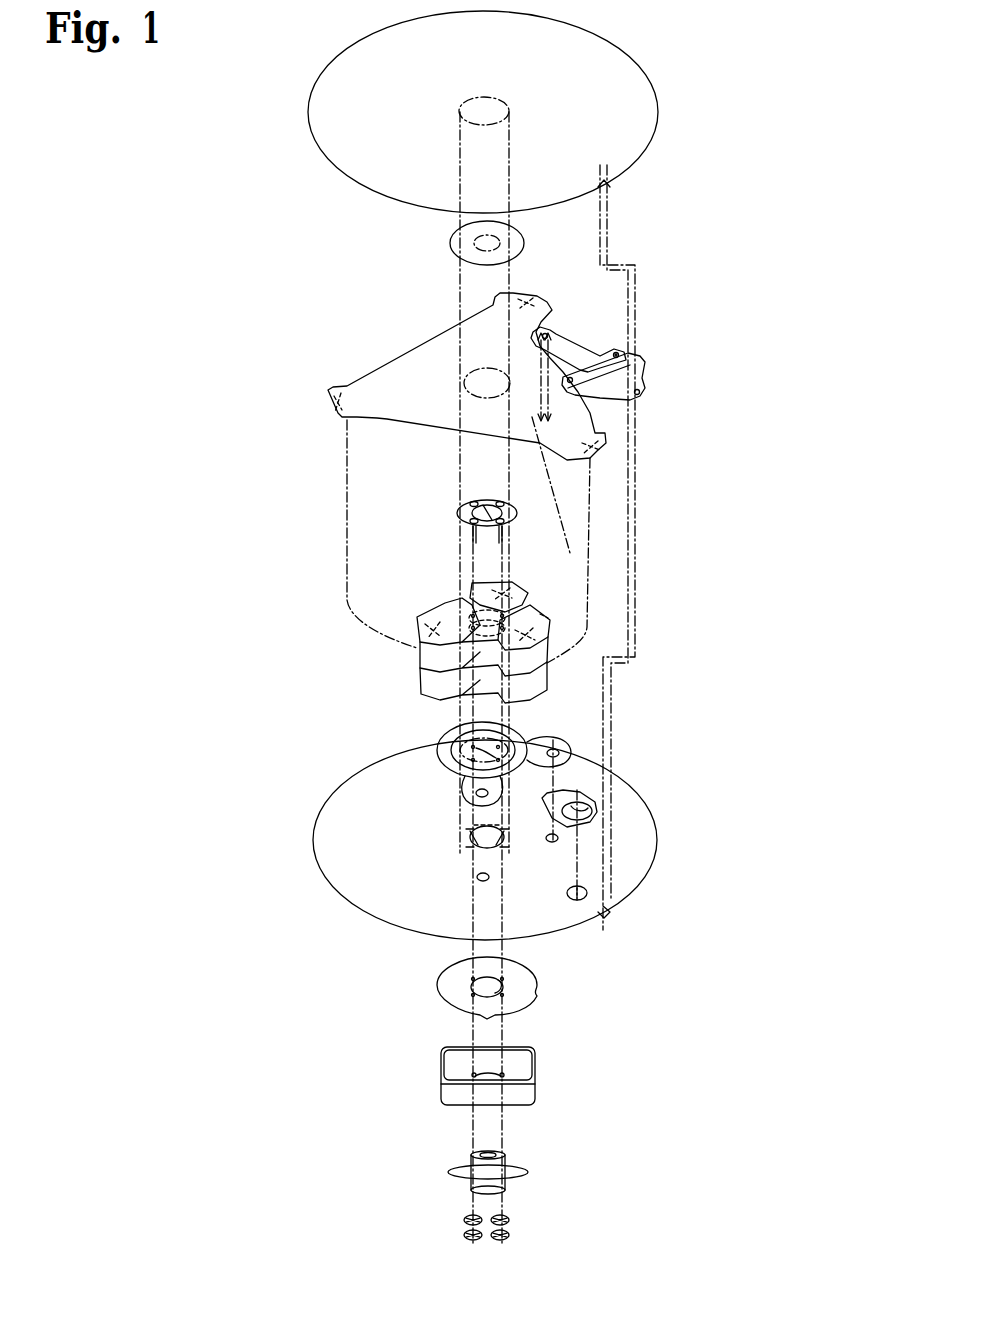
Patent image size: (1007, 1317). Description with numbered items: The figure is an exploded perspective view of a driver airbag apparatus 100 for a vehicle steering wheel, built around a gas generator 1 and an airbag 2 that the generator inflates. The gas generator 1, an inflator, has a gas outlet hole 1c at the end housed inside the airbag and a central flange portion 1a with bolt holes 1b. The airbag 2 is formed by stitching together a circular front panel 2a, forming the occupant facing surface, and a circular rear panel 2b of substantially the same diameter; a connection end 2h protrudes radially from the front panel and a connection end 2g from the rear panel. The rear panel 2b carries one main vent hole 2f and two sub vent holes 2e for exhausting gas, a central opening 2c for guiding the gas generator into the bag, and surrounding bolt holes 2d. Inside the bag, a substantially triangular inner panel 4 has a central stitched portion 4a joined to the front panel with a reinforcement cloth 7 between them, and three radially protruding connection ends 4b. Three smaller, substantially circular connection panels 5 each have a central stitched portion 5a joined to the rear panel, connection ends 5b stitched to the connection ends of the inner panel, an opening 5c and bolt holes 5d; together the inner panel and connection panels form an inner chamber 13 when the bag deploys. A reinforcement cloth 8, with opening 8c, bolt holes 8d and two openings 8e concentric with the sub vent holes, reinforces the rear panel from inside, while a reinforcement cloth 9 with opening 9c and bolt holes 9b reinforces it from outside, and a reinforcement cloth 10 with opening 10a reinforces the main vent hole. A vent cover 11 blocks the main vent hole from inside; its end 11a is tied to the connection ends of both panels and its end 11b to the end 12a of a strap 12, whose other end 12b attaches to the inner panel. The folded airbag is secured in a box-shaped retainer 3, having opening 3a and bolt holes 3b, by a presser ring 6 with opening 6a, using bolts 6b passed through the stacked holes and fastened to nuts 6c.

The airbag apparatus 100 is at (103, 256).
The gas generator 1 is at (463, 1187).
The flange portion 1a is at (466, 1168).
The bolt holes 1b is at (508, 1178).
The gas outlet hole 1c is at (488, 1156).
The airbag 2 is at (736, 300).
The front panel 2a is at (620, 125).
The rear panel 2b is at (632, 799).
The opening 2c is at (483, 833).
The bolt holes 2d is at (474, 829).
The sub vent holes 2e is at (483, 878).
The main vent hole 2f is at (588, 893).
The connection end 2g is at (603, 915).
The connection end 2h is at (606, 186).
The retainer 3 is at (430, 1087).
The opening 3a is at (488, 1076).
The bolt holes 3b is at (474, 1075).
The inner panel 4 is at (408, 434).
The central stitched portion 4a is at (465, 380).
The connection ends 4b is at (548, 297).
The connection panels 5 is at (445, 606).
The central stitched portion 5a is at (522, 618).
The connection ends 5b is at (525, 589).
The opening 5c is at (490, 630).
The bolt holes 5d is at (476, 616).
The presser ring 6 is at (457, 507).
The opening 6a is at (483, 502).
The bolts 6b is at (474, 536).
The nuts 6c is at (463, 1219).
The reinforcement cloth 7 is at (451, 243).
The reinforcement cloth 8 is at (428, 754).
The opening 8c is at (450, 748).
The bolt holes 8d is at (470, 750).
The openings 8e is at (549, 748).
The reinforcement cloth 9 is at (433, 991).
The bolt holes 9b is at (473, 980).
The opening 9c is at (503, 985).
The reinforcement cloth 10 is at (600, 790).
The opening 10a is at (592, 809).
The vent cover 11 is at (646, 368).
The end 11a is at (637, 392).
The end 11b is at (592, 364).
The strap 12 is at (577, 344).
The end 12a is at (621, 351).
The end 12b is at (549, 330).
The inner chamber 13 is at (123, 548).